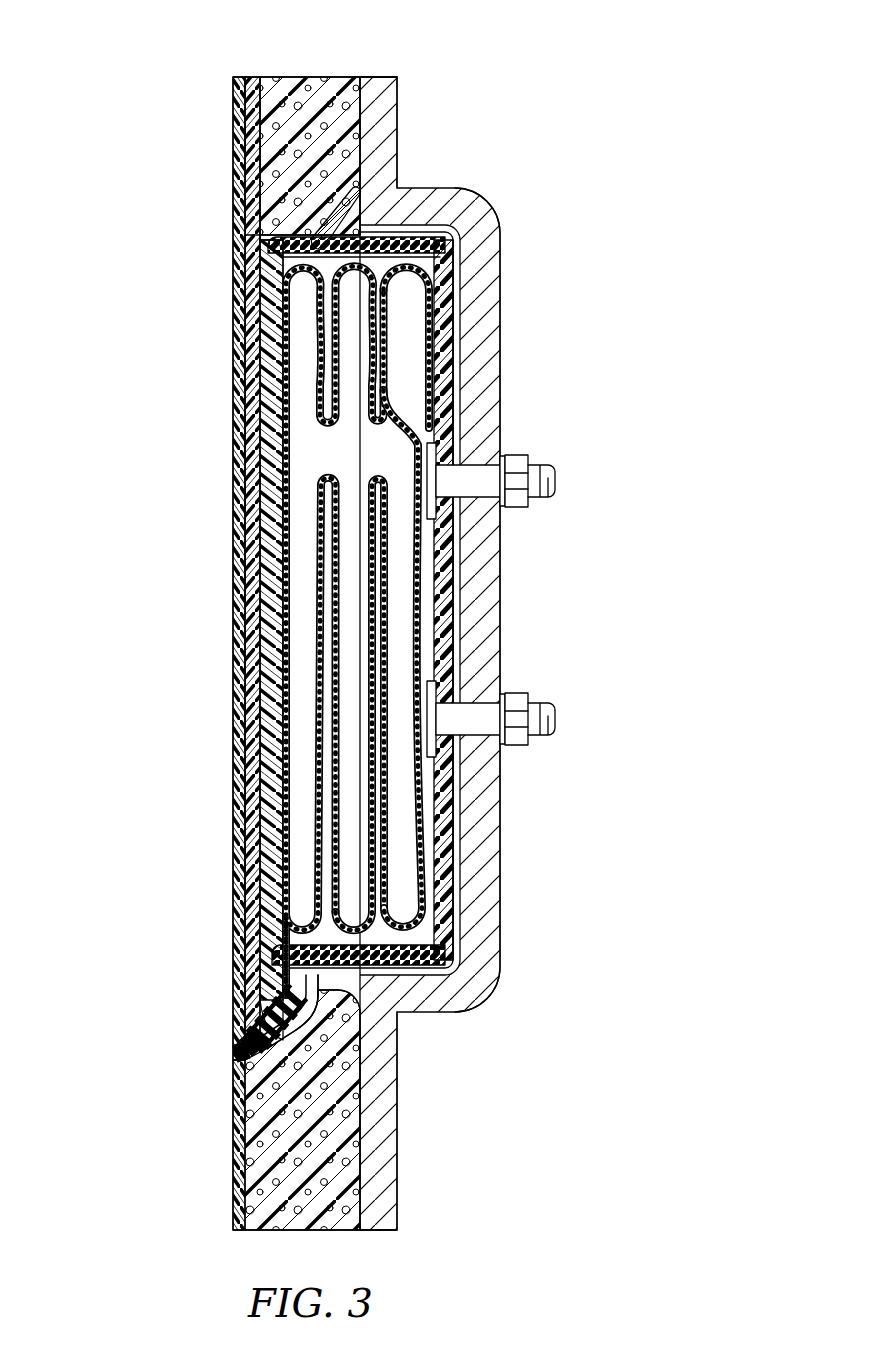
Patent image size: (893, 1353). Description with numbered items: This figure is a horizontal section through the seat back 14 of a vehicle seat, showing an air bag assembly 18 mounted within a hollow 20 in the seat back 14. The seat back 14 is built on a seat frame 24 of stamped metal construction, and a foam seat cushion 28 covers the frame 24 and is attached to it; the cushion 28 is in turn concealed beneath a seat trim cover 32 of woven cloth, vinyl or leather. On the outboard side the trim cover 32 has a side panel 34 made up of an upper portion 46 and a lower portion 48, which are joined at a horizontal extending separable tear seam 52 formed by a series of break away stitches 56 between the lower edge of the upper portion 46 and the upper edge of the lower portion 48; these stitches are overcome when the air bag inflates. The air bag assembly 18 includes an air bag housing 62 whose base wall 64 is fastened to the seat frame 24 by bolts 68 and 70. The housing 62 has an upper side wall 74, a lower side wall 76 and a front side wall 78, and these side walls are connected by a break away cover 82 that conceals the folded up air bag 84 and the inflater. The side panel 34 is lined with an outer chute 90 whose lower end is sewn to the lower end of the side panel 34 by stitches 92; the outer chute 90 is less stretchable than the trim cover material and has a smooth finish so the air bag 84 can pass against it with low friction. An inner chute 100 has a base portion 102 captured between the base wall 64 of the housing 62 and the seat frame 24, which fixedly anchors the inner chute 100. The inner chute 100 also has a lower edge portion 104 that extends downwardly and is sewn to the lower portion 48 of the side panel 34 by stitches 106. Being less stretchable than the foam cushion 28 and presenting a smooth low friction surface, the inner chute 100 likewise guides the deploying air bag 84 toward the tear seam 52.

The seat back 14 is at (373, 103).
The air bag assembly 18 is at (416, 880).
The hollow 20 is at (373, 233).
The seat frame 24 is at (492, 288).
The foam seat cushion 28 is at (282, 80).
The seat trim cover 32 is at (233, 248).
The side panel 34 is at (235, 615).
The upper portion 46 is at (238, 767).
The lower portion 48 is at (235, 1165).
The horizontal extending separable tear seam 52 is at (247, 1042).
The break away stitches 56 is at (240, 1060).
The air bag housing 62 is at (445, 580).
The base wall 64 is at (440, 650).
The bolt 68 is at (553, 480).
The bolt 70 is at (553, 718).
The upper side wall 74 is at (370, 247).
The lower side wall 76 is at (405, 957).
The front side wall 78 is at (340, 450).
The break away cover 82 is at (267, 885).
The folded up air bag 84 is at (390, 908).
The outer chute 90 is at (252, 470).
The stitches 92 is at (265, 1015).
The inner chute 100 is at (465, 407).
The base portion 102 is at (455, 372).
The lower edge portion 104 is at (358, 1000).
The stitches 106 is at (358, 1055).